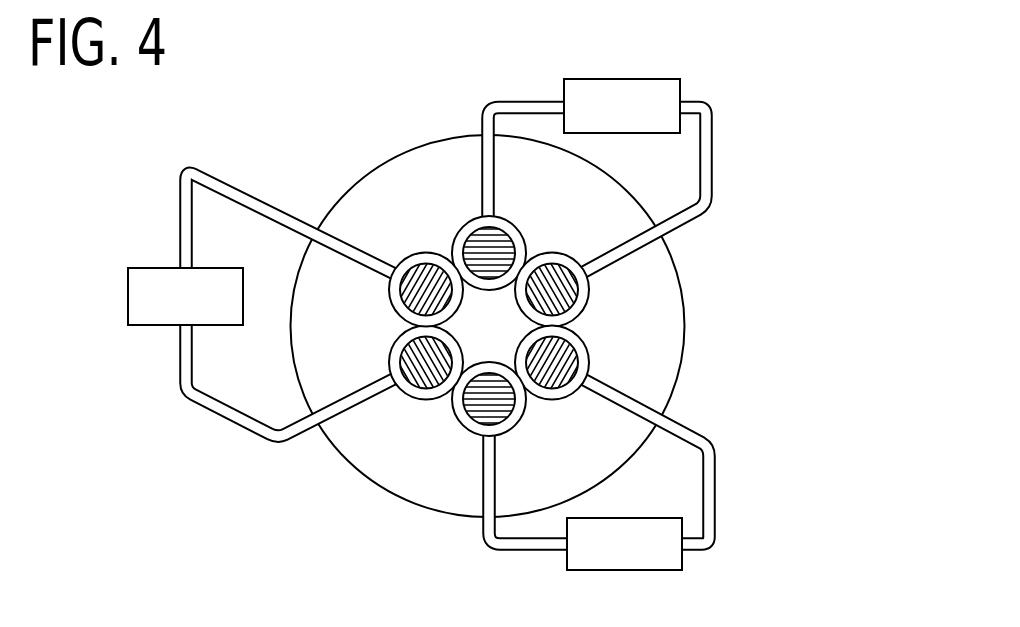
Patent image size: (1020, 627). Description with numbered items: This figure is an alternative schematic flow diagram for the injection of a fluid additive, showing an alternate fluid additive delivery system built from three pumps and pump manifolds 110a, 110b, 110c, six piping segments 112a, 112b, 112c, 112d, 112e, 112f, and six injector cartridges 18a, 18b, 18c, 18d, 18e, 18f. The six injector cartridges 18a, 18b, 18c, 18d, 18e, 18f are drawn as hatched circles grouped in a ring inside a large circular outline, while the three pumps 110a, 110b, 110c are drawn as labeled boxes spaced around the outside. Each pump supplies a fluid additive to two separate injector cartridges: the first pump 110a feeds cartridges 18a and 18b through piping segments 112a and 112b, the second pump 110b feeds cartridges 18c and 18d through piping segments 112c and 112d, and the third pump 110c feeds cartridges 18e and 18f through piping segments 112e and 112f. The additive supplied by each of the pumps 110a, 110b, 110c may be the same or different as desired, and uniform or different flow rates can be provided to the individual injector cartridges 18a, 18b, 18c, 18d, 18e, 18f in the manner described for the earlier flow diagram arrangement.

The injector cartridge 18a is at (467, 232).
The injector cartridge 18b is at (560, 254).
The injector cartridge 18c is at (590, 358).
The injector cartridge 18d is at (512, 418).
The injector cartridge 18e is at (391, 355).
The injector cartridge 18f is at (390, 288).
The pump and pump manifold 110a is at (680, 84).
The pump and pump manifold 110b is at (682, 564).
The pump and pump manifold 110c is at (143, 268).
The piping segment 112a is at (494, 104).
The piping segment 112b is at (712, 153).
The piping segment 112c is at (715, 492).
The piping segment 112d is at (483, 536).
The piping segment 112e is at (343, 414).
The piping segment 112f is at (253, 188).